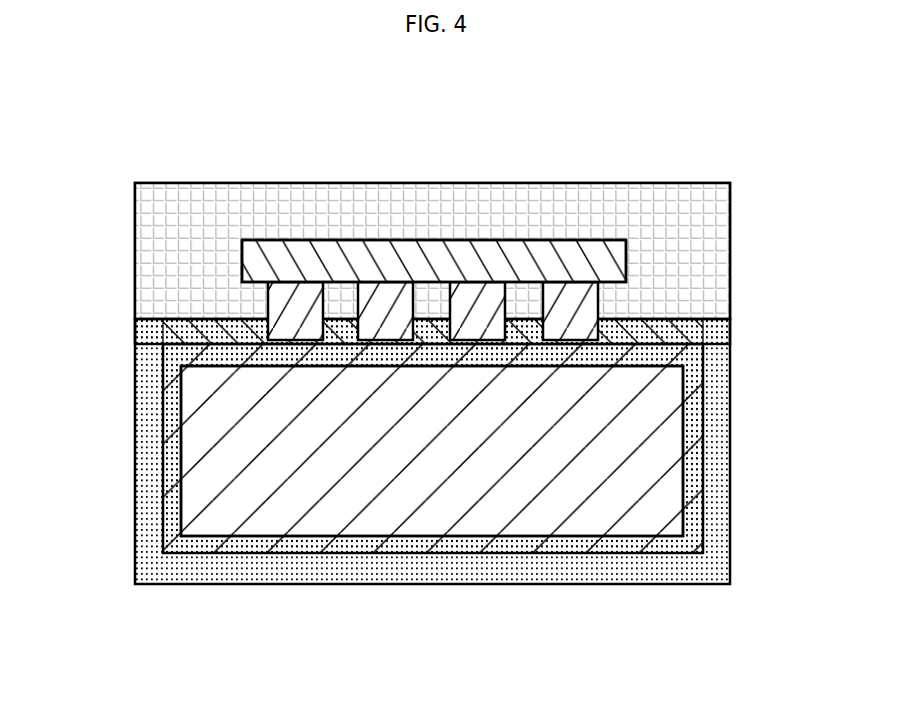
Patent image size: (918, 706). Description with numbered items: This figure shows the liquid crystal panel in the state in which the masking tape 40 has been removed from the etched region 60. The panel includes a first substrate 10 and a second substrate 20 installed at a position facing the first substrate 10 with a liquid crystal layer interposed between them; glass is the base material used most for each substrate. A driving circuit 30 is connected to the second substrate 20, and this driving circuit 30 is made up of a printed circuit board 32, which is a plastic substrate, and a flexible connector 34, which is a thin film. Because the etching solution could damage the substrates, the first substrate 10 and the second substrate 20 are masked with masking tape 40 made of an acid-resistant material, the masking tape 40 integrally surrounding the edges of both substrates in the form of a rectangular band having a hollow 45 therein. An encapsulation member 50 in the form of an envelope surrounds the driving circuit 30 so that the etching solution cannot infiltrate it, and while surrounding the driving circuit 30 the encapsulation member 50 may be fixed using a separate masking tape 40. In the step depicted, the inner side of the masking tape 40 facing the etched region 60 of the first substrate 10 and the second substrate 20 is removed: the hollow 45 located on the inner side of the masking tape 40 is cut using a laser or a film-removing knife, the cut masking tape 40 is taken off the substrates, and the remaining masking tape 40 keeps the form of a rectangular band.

The first substrate 10 is at (692, 468).
The second substrate 20 is at (672, 324).
The driving circuit 30 is at (502, 228).
The printed circuit board 32 is at (368, 250).
The flexible connector 34 is at (273, 302).
The masking tape 40 is at (717, 515).
The hollow 45 is at (679, 387).
The encapsulation member 50 is at (187, 197).
The etched region 60 is at (443, 452).